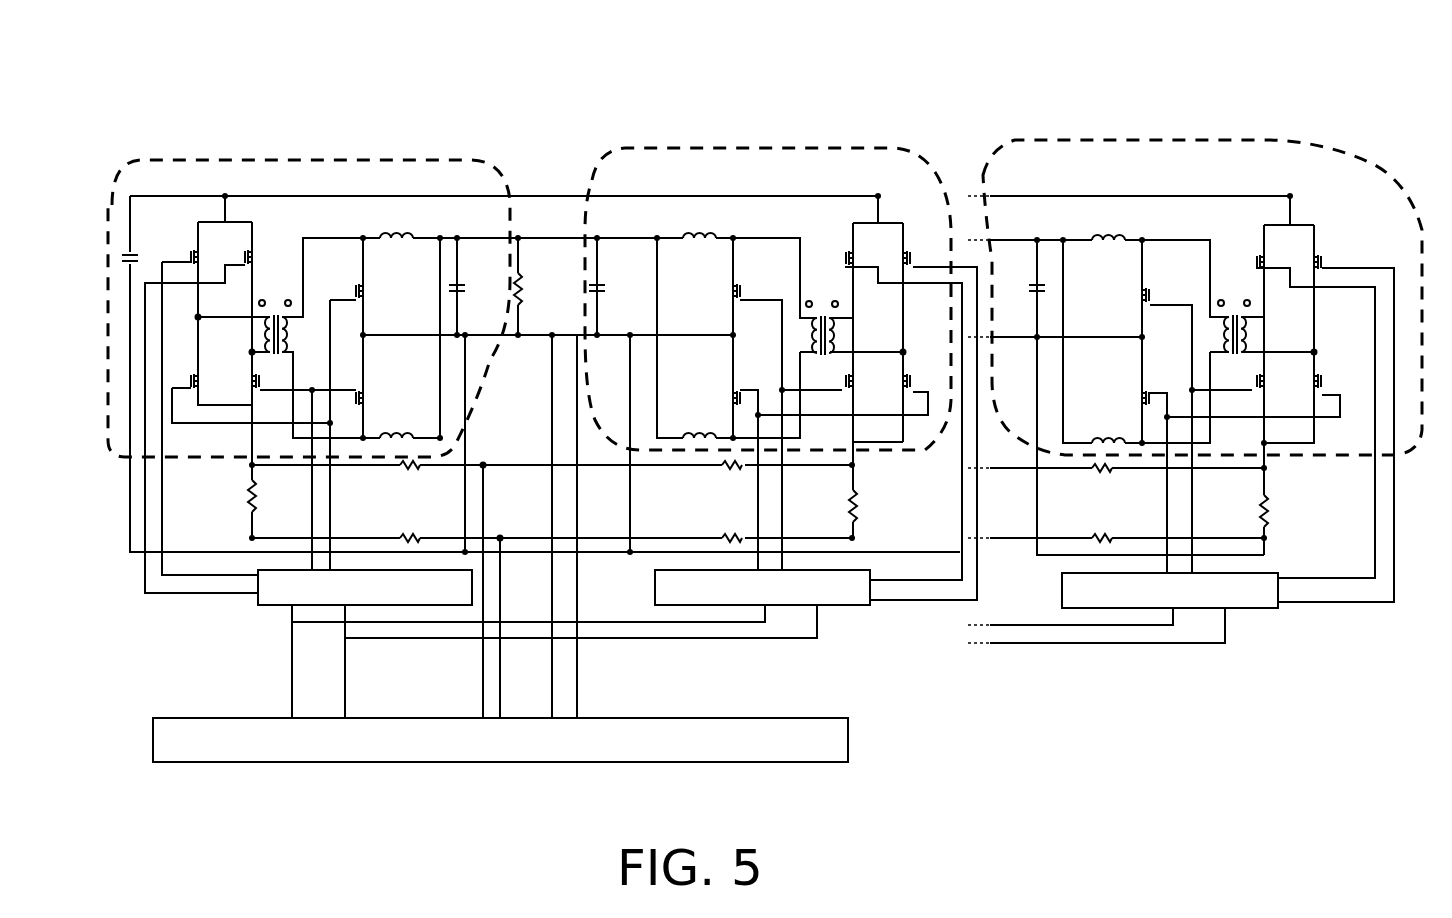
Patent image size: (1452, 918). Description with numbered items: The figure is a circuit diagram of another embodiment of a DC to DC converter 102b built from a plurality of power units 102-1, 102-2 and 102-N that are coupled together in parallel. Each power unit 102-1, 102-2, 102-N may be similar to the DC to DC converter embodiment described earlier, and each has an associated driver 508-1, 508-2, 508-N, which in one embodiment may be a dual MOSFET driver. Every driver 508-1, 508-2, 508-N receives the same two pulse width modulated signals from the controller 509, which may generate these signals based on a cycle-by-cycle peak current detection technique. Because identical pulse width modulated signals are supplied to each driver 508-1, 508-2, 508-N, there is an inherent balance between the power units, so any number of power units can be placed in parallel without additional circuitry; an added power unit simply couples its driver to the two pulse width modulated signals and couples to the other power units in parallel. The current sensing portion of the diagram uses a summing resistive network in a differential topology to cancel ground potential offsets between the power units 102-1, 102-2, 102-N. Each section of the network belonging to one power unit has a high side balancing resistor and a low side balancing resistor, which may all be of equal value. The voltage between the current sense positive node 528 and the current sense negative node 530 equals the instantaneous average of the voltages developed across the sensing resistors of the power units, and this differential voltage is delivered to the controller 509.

The DC to DC converter 102b is at (142, 102).
The power unit 102-1 is at (273, 160).
The power unit 102-2 is at (638, 147).
The power unit 102-N is at (1103, 137).
The driver 508-1 is at (277, 605).
The driver 508-2 is at (862, 605).
The driver 508-N is at (1260, 608).
The controller 509 is at (848, 750).
The CSP node 528 is at (483, 465).
The CSN node 530 is at (500, 537).